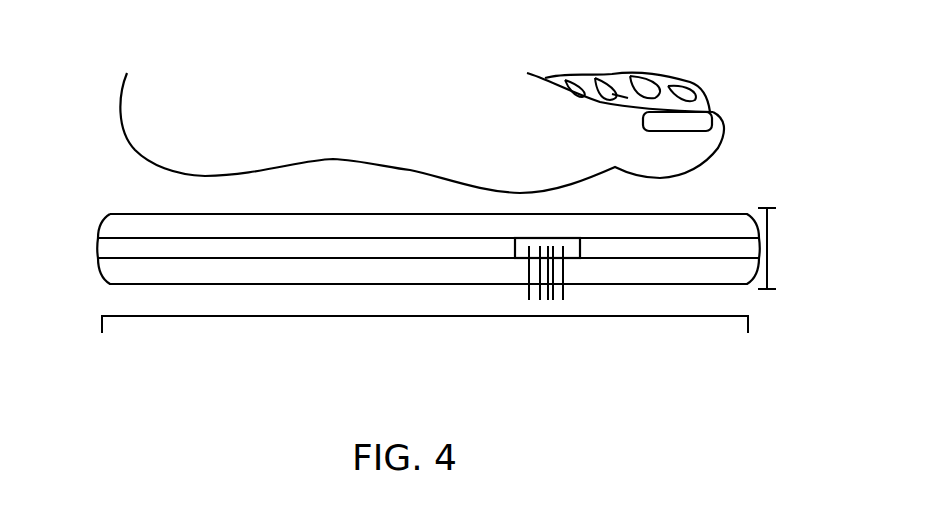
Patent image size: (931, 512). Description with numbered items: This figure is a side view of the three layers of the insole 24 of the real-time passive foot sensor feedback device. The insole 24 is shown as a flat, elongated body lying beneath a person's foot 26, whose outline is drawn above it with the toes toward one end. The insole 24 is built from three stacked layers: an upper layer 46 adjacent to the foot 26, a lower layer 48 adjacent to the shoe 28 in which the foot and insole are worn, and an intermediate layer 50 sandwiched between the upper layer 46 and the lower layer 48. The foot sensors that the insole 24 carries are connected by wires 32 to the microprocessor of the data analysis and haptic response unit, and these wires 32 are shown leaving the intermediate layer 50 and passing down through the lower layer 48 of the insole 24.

The insole 24 is at (775, 258).
The foot 26 is at (710, 87).
The shoe 28 is at (137, 325).
The wires 32 is at (698, 316).
The upper layer 46 is at (105, 222).
The lower layer 48 is at (103, 277).
The intermediate layer 50 is at (100, 250).